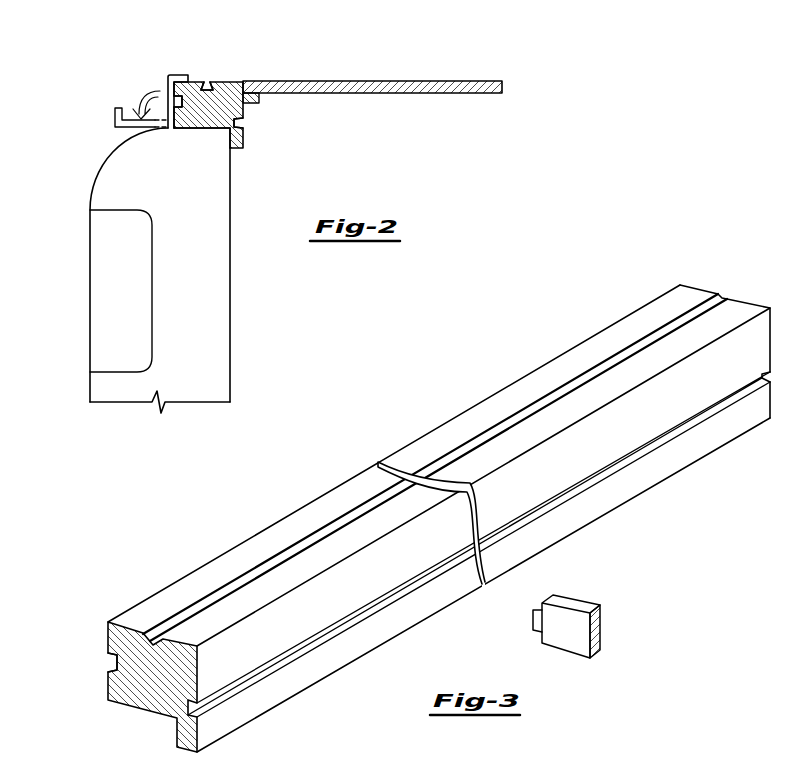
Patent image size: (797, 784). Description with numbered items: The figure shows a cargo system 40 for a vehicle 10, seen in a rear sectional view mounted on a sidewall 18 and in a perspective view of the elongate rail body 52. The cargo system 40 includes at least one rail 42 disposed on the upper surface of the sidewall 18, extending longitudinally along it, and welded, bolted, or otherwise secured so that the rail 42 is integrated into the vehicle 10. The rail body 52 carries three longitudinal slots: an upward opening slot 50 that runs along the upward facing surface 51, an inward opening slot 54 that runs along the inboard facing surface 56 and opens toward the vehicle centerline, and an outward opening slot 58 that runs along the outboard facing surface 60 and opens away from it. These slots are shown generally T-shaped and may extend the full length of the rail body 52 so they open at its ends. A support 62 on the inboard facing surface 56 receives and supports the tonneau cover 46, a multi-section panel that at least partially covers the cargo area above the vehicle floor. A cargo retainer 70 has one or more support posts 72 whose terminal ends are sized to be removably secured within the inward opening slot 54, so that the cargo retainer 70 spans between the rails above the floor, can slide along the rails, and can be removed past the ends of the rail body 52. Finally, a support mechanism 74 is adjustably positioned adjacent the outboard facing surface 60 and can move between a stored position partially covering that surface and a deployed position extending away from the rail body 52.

In FIG. 2, the vehicle 10 is at (89, 387).
In FIG. 2, the sidewall 18 is at (208, 315).
In FIG. 2, the cargo system 40 is at (120, 77).
In FIG. 3, the cargo system 40 is at (720, 283).
In FIG. 3, the rail 42 is at (193, 592).
In FIG. 2, the tonneau cover 46 is at (502, 88).
In FIG. 2, the upward opening slot 50 is at (207, 81).
In FIG. 3, the upward opening slot 50 is at (632, 350).
In FIG. 3, the upward facing surface 51 is at (505, 397).
In FIG. 2, the rail body 52 is at (204, 120).
In FIG. 2, the inward opening slot 54 is at (240, 124).
In FIG. 3, the inward opening slot 54 is at (587, 480).
In FIG. 3, the inboard facing surface 56 is at (552, 530).
In FIG. 2, the outward opening slot 58 is at (176, 98).
In FIG. 3, the outward opening slot 58 is at (110, 662).
In FIG. 3, the outboard facing surface 60 is at (108, 638).
In FIG. 2, the support 62 is at (259, 99).
In FIG. 3, the cargo retainer 70 is at (578, 602).
In FIG. 3, the support post 72 is at (532, 623).
In FIG. 2, the support mechanism 74 is at (172, 78).